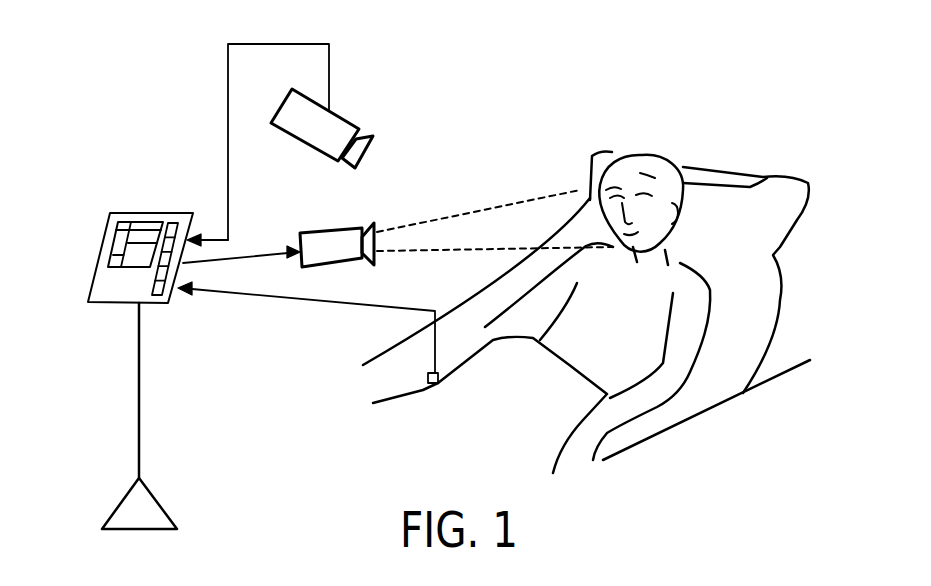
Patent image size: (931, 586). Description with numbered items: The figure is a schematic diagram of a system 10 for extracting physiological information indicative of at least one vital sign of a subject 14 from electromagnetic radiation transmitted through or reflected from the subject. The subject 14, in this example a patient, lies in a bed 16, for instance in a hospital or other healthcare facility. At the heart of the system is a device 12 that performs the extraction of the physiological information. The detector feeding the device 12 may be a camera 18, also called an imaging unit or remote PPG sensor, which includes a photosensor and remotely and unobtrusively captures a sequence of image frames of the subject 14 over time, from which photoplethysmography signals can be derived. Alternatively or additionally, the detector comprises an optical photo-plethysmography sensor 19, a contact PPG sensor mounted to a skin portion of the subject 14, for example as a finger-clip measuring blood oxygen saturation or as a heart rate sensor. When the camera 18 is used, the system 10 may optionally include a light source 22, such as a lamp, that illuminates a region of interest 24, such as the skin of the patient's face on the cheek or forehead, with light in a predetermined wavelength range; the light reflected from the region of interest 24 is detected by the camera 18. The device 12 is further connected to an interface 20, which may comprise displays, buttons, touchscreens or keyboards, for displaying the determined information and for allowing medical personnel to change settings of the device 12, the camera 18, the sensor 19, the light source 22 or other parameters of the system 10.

The system 10 is at (135, 120).
The device 12 is at (113, 286).
The subject 14 is at (564, 292).
The bed 16 is at (750, 327).
The camera 18 is at (343, 118).
The optical photo-plethysmography sensor 19 is at (440, 383).
The interface 20 is at (102, 245).
The light source 22 is at (313, 232).
The region of interest 24 is at (603, 217).